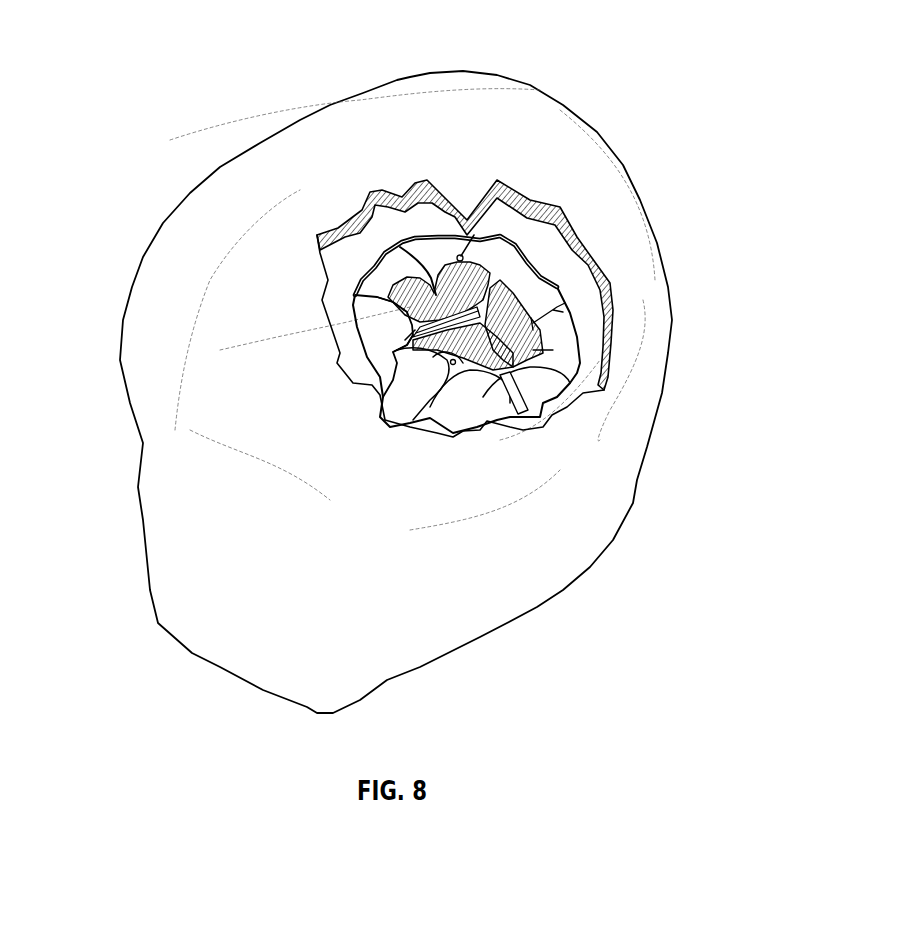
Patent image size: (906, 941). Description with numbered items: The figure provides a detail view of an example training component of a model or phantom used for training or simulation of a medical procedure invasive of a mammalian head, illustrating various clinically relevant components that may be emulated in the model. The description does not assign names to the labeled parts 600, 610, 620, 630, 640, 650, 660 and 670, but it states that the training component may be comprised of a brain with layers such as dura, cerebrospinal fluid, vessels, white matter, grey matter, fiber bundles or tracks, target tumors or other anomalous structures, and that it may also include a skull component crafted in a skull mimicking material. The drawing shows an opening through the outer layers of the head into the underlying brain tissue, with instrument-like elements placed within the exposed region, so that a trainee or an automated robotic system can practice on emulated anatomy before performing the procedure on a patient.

The head with skull flap opening 600 is at (538, 196).
The dura flap 610 is at (543, 252).
The lead wire 620 is at (432, 253).
The dura edge 630 is at (585, 322).
The brain tissue 640 is at (607, 373).
The lower lead 650 is at (491, 366).
The subdural space 660 is at (407, 322).
The electrode region 670 is at (438, 357).